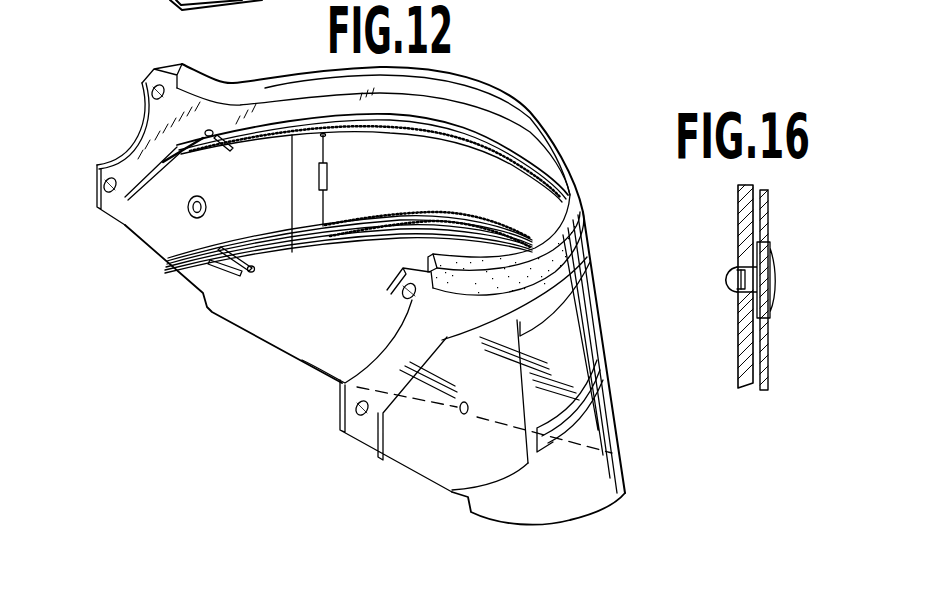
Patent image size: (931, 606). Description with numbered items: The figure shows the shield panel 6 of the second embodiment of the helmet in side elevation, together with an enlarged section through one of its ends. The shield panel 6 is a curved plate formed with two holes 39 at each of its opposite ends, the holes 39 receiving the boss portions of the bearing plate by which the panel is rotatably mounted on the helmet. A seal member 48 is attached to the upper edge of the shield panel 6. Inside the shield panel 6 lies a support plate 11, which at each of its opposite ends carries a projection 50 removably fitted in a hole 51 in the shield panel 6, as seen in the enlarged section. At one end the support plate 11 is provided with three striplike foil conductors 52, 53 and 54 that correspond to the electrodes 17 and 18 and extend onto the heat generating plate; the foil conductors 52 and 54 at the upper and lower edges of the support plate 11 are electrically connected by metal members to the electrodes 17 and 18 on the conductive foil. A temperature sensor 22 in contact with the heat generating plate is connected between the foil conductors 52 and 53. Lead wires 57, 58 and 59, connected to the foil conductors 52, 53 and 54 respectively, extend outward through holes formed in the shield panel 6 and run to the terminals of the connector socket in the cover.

In FIG. 12, the seal member 48 is at (478, 80).
In FIG. 12, the holes 39 is at (148, 95).
In FIG. 12, the electrode 17 is at (507, 139).
In FIG. 12, the electrode 18 is at (423, 229).
In FIG. 12, the foil conductor 52 is at (275, 137).
In FIG. 12, the temperature sensor 22 is at (318, 185).
In FIG. 12, the lead wire 57 is at (212, 131).
In FIG. 12, the hole 51 is at (190, 217).
In FIG. 16, the hole 51 is at (726, 276).
In FIG. 12, the foil conductor 53 is at (168, 272).
In FIG. 12, the foil conductor 54 is at (278, 252).
In FIG. 12, the lead wire 59 is at (232, 280).
In FIG. 12, the lead wire 58 is at (247, 276).
In FIG. 16, the shield panel 6 is at (737, 214).
In FIG. 16, the support plate 11 is at (768, 222).
In FIG. 16, the projection 50 is at (730, 290).